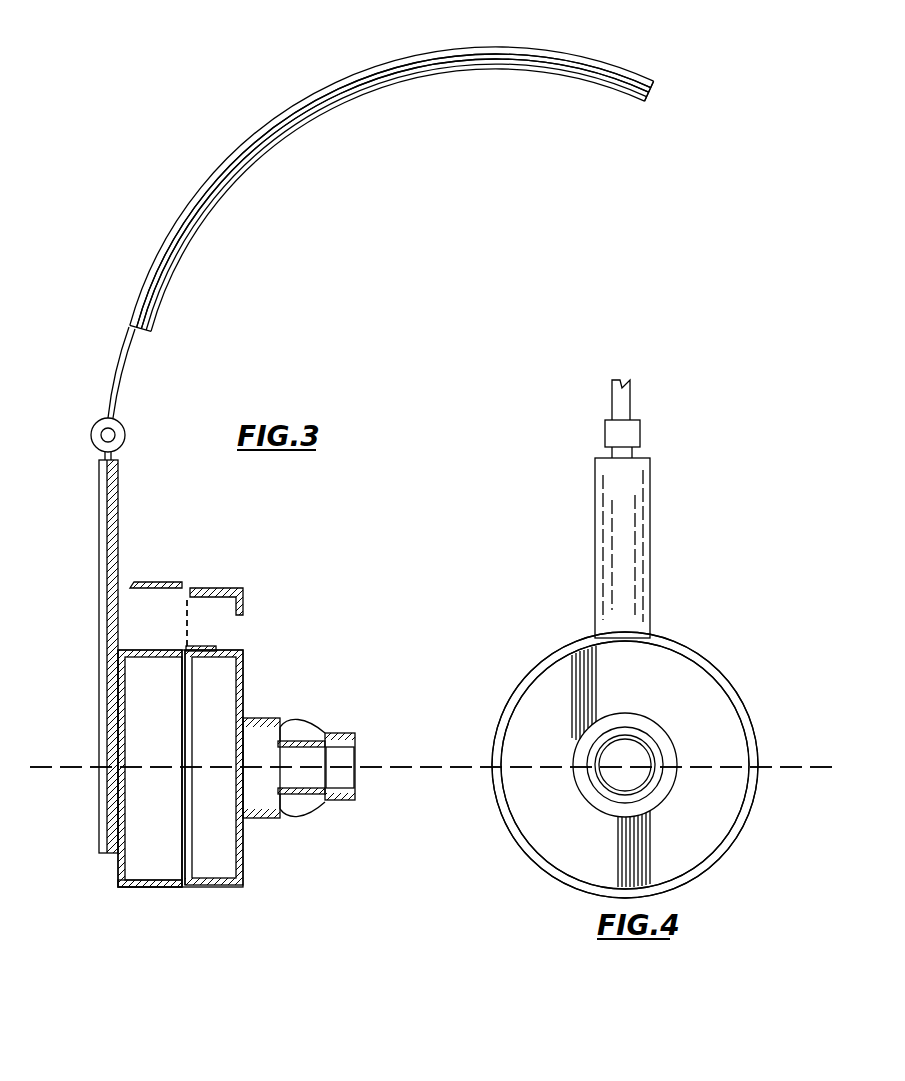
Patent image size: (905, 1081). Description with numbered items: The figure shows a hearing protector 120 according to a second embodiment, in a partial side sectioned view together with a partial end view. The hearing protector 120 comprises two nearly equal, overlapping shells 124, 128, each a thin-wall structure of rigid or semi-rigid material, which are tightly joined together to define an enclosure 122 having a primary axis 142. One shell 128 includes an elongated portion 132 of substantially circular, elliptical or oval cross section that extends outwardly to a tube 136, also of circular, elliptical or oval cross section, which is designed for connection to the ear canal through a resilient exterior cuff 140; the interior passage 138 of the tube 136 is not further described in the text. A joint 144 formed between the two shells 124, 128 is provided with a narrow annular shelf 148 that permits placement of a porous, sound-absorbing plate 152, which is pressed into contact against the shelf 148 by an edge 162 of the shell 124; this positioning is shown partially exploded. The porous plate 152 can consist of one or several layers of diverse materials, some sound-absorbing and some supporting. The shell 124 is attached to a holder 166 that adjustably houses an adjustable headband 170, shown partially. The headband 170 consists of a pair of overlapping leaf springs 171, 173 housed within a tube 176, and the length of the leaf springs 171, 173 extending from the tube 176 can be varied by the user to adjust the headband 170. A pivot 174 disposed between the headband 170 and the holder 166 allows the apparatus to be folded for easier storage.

In FIG. 3, the hearing protector 120 is at (340, 644).
In FIG. 4, the hearing protector 120 is at (805, 572).
In FIG. 3, the enclosure 122 is at (138, 857).
In FIG. 4, the enclosure 122 is at (735, 785).
In FIG. 3, the shell 124 is at (141, 887).
In FIG. 3, the shell 128 is at (248, 825).
In FIG. 4, the shell 128 is at (745, 802).
In FIG. 3, the elongated portion 132 is at (270, 718).
In FIG. 4, the elongated portion 132 is at (670, 740).
In FIG. 3, the tube 136 is at (312, 728).
In FIG. 4, the tube 136 is at (642, 793).
In FIG. 3, the outlet passage 138 is at (326, 765).
In FIG. 4, the outlet passage 138 is at (610, 755).
In FIG. 3, the resilient exterior cuff 140 is at (345, 800).
In FIG. 4, the resilient exterior cuff 140 is at (632, 740).
In FIG. 3, the primary axis of the enclosure 142 is at (82, 765).
In FIG. 3, the joint 144 is at (204, 588).
In FIG. 3, the narrow annular shelf 148 is at (207, 648).
In FIG. 3, the porous sound-absorbing plate 152 is at (184, 790).
In FIG. 3, the edge of the shell 162 is at (174, 580).
In FIG. 3, the holder 166 is at (120, 500).
In FIG. 4, the holder 166 is at (652, 518).
In FIG. 3, the adjustable headband 170 is at (205, 268).
In FIG. 4, the adjustable headband 170 is at (626, 382).
In FIG. 3, the leaf spring 171 is at (195, 170).
In FIG. 3, the leaf spring 173 is at (636, 102).
In FIG. 3, the pivot 174 is at (125, 432).
In FIG. 4, the pivot 174 is at (640, 432).
In FIG. 3, the tube 176 is at (264, 125).